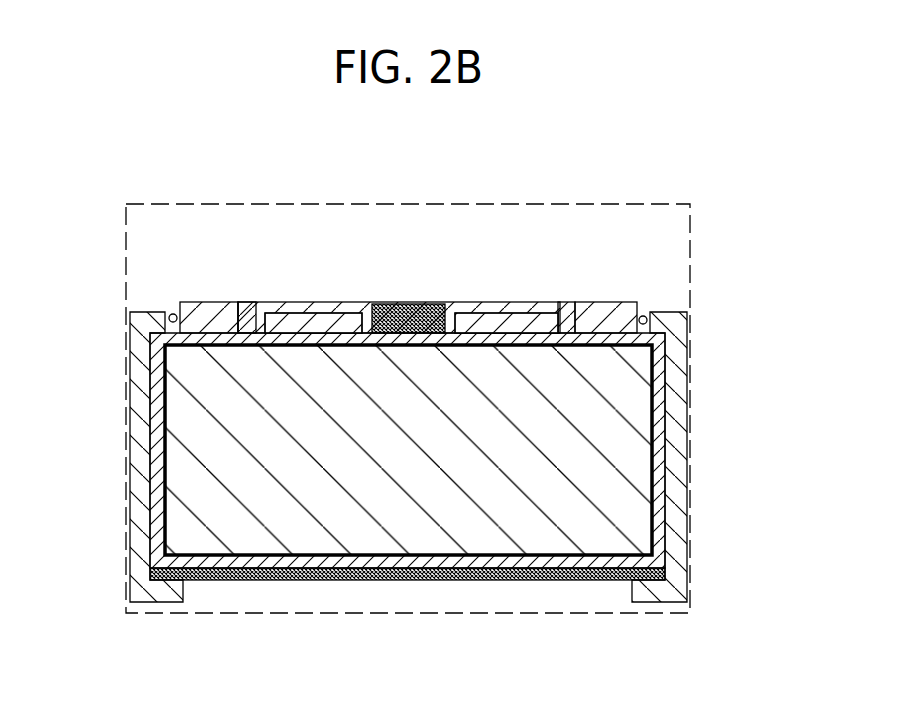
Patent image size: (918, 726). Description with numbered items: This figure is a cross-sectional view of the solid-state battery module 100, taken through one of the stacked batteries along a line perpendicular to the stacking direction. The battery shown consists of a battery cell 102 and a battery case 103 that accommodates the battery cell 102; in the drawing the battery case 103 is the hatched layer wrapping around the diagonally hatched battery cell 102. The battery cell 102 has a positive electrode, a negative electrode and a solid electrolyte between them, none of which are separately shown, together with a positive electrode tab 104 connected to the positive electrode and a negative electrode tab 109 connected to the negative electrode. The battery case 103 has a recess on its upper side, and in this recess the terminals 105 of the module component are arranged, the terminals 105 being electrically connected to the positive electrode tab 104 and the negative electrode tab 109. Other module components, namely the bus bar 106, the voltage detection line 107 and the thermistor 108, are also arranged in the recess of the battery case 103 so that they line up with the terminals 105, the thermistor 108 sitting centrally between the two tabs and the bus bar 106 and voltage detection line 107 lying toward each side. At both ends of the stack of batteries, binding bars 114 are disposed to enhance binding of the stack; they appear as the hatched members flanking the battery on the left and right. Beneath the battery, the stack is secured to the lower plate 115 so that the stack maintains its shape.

The battery module 100 is at (703, 200).
The battery cell 102 is at (590, 406).
The battery case 103 is at (657, 342).
The positive electrode tab 104 is at (331, 312).
The terminals 105 is at (247, 301).
The bus bar 106 is at (209, 301).
The voltage detection line 107 is at (173, 313).
The thermistor 108 is at (406, 303).
The negative electrode tab 109 is at (490, 312).
The binding bars 114 is at (131, 456).
The lower plate 115 is at (288, 575).